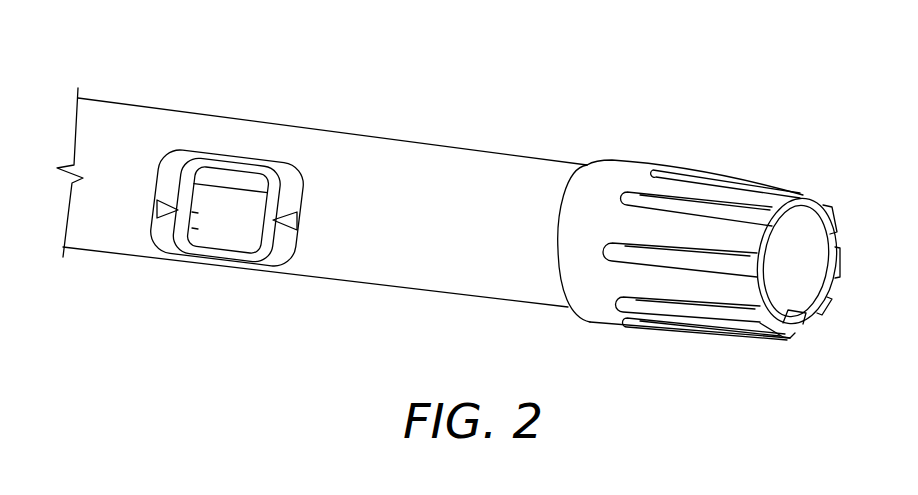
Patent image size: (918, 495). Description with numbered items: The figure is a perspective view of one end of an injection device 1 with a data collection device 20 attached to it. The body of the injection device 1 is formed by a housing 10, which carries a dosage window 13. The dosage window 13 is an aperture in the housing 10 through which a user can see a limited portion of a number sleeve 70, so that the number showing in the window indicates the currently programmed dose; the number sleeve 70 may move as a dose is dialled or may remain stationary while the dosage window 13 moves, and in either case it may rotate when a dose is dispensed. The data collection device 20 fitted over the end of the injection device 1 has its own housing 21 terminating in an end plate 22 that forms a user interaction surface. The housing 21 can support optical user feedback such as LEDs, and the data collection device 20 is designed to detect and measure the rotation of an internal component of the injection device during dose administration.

The injection device 1 is at (100, 60).
The housing 10 is at (110, 257).
The dosage window 13 is at (257, 153).
The number sleeve 70 is at (222, 245).
The data collection device 20 is at (700, 344).
The housing 21 is at (627, 162).
The end plate 22 is at (812, 222).